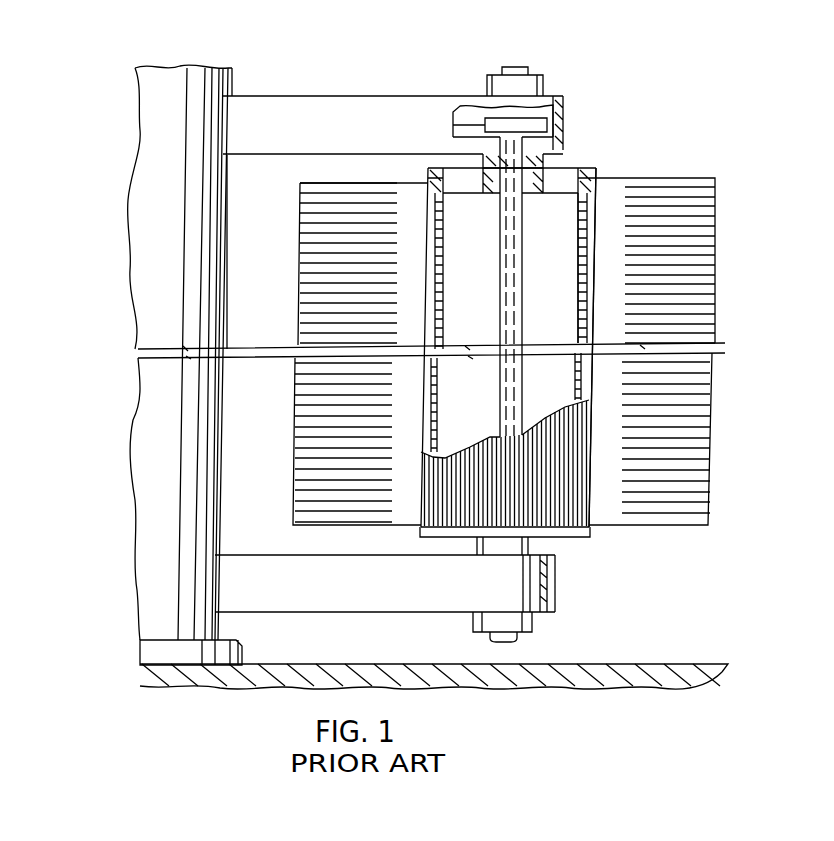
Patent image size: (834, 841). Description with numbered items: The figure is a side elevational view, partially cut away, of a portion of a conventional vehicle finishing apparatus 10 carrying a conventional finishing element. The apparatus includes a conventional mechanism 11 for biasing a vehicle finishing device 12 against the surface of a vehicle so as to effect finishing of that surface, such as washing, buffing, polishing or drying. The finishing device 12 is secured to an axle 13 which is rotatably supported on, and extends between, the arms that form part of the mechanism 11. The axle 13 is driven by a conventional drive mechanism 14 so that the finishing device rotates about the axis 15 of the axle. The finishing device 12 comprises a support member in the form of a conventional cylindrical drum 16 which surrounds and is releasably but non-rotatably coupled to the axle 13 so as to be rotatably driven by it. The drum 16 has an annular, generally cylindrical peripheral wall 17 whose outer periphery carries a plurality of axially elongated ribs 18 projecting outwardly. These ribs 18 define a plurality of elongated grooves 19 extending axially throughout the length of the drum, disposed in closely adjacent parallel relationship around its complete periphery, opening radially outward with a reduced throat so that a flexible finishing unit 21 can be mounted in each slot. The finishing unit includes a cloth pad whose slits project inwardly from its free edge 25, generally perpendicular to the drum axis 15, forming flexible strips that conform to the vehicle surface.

The vehicle finishing apparatus 10 is at (645, 105).
The biasing mechanism 11 is at (348, 96).
The vehicle finishing device 12 is at (589, 538).
The axle 13 is at (500, 243).
The drive mechanism 14 is at (470, 120).
The axis 15 is at (507, 280).
The cylindrical drum 16 is at (583, 170).
The peripheral wall 17 is at (580, 262).
The ribs 18 is at (577, 302).
The grooves 19 is at (590, 215).
The flexible finishing unit 21 is at (715, 271).
The free edge 25 is at (712, 420).